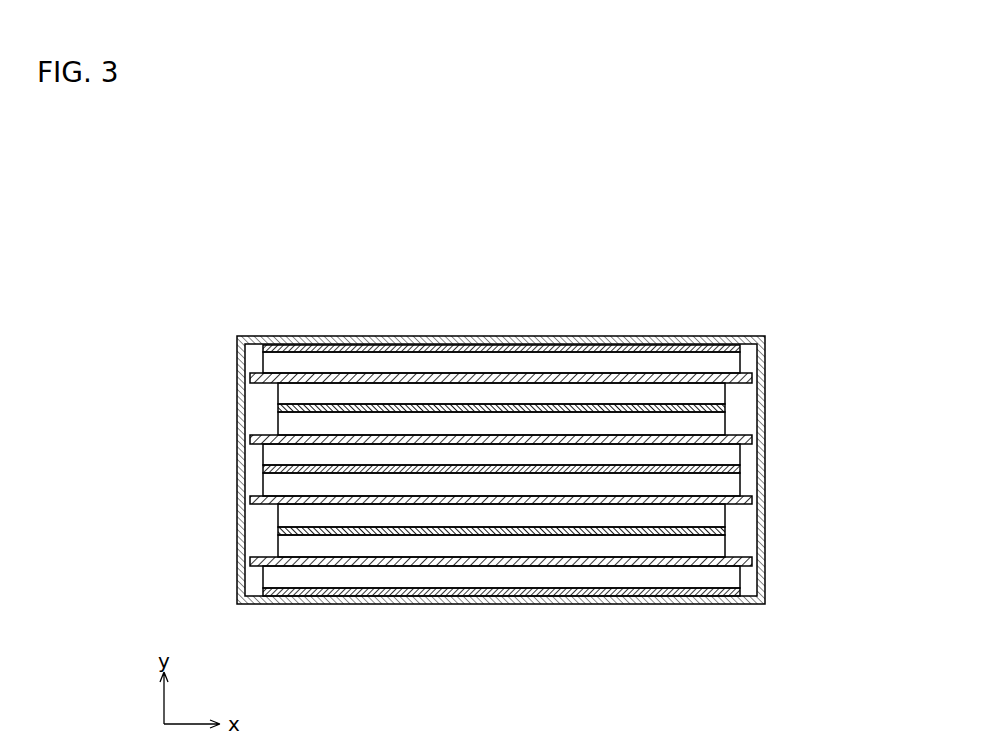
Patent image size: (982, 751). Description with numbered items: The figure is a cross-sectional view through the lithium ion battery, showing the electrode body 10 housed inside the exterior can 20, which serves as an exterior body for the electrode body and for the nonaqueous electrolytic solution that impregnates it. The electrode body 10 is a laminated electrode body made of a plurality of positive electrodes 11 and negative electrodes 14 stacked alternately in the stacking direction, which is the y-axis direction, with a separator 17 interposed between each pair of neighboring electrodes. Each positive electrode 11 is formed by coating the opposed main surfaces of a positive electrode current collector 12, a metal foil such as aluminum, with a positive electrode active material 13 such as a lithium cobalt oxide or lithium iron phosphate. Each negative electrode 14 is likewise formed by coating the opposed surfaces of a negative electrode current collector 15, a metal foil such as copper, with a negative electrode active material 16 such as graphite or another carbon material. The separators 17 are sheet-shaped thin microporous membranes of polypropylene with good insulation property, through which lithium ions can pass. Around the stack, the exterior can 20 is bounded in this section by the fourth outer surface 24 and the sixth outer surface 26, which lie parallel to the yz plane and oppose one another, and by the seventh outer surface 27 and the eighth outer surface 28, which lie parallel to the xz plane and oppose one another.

The electrode body 10 is at (473, 471).
The positive electrode 11 is at (432, 464).
The positive electrode current collector 12 is at (277, 407).
The positive electrode active material 13 is at (277, 388).
The negative electrode 14 is at (434, 470).
The negative electrode current collector 15 is at (263, 470).
The negative electrode active material 16 is at (263, 452).
The separator 17 is at (250, 500).
The exterior can 20 is at (440, 336).
The fourth outer surface 24 is at (228, 572).
The sixth outer surface 26 is at (777, 430).
The seventh outer surface 27 is at (486, 615).
The eighth outer surface 28 is at (562, 326).